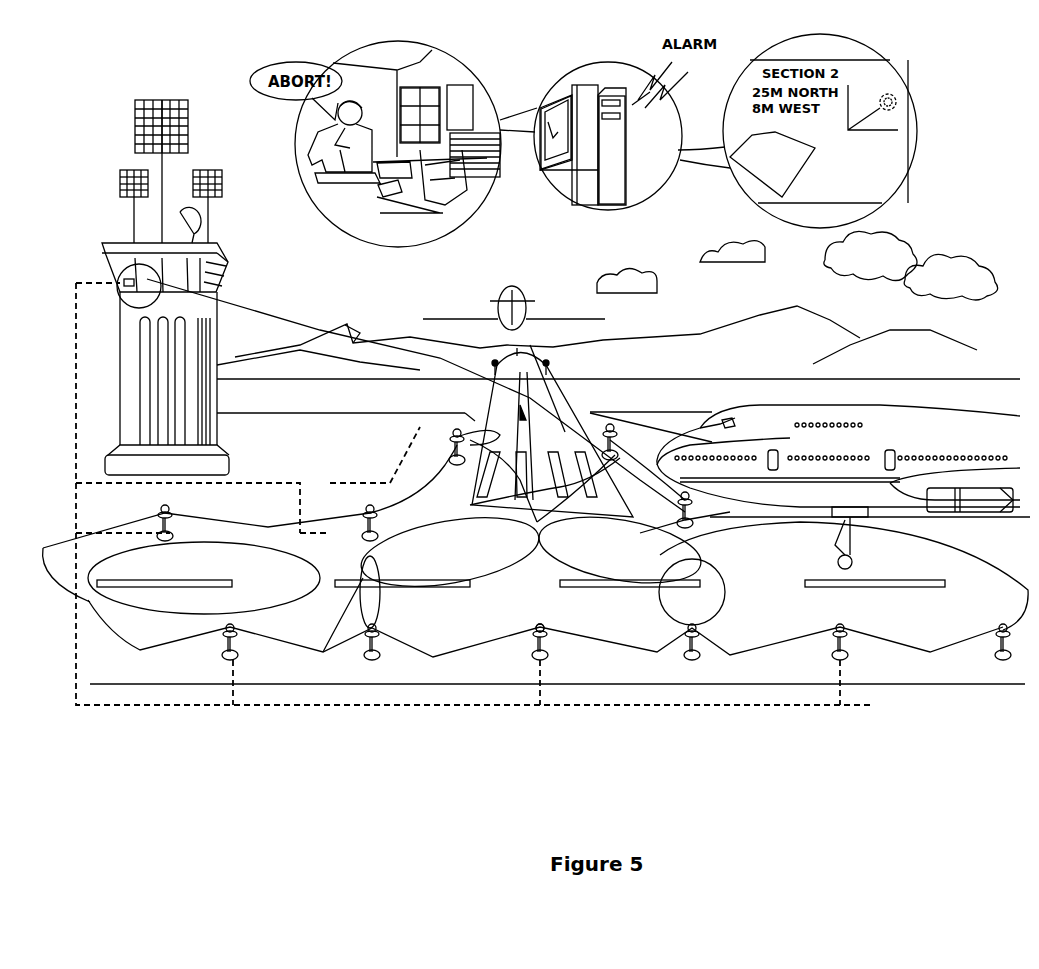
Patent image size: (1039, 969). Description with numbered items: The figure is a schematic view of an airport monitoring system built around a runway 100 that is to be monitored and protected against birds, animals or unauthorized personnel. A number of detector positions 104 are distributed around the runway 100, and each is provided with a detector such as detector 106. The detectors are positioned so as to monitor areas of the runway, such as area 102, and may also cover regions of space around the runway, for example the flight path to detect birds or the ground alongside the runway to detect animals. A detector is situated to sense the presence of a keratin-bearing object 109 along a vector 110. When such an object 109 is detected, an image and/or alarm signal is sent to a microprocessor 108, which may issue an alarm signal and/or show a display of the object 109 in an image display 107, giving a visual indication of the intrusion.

The runway 100 is at (100, 658).
The area 102 is at (545, 383).
The detector positions 104 is at (222, 660).
The detector 106 is at (535, 625).
The image display 107 is at (418, 52).
The microprocessor 108 is at (640, 90).
The object comprising keratin 109 is at (462, 432).
The vector 110 is at (397, 455).